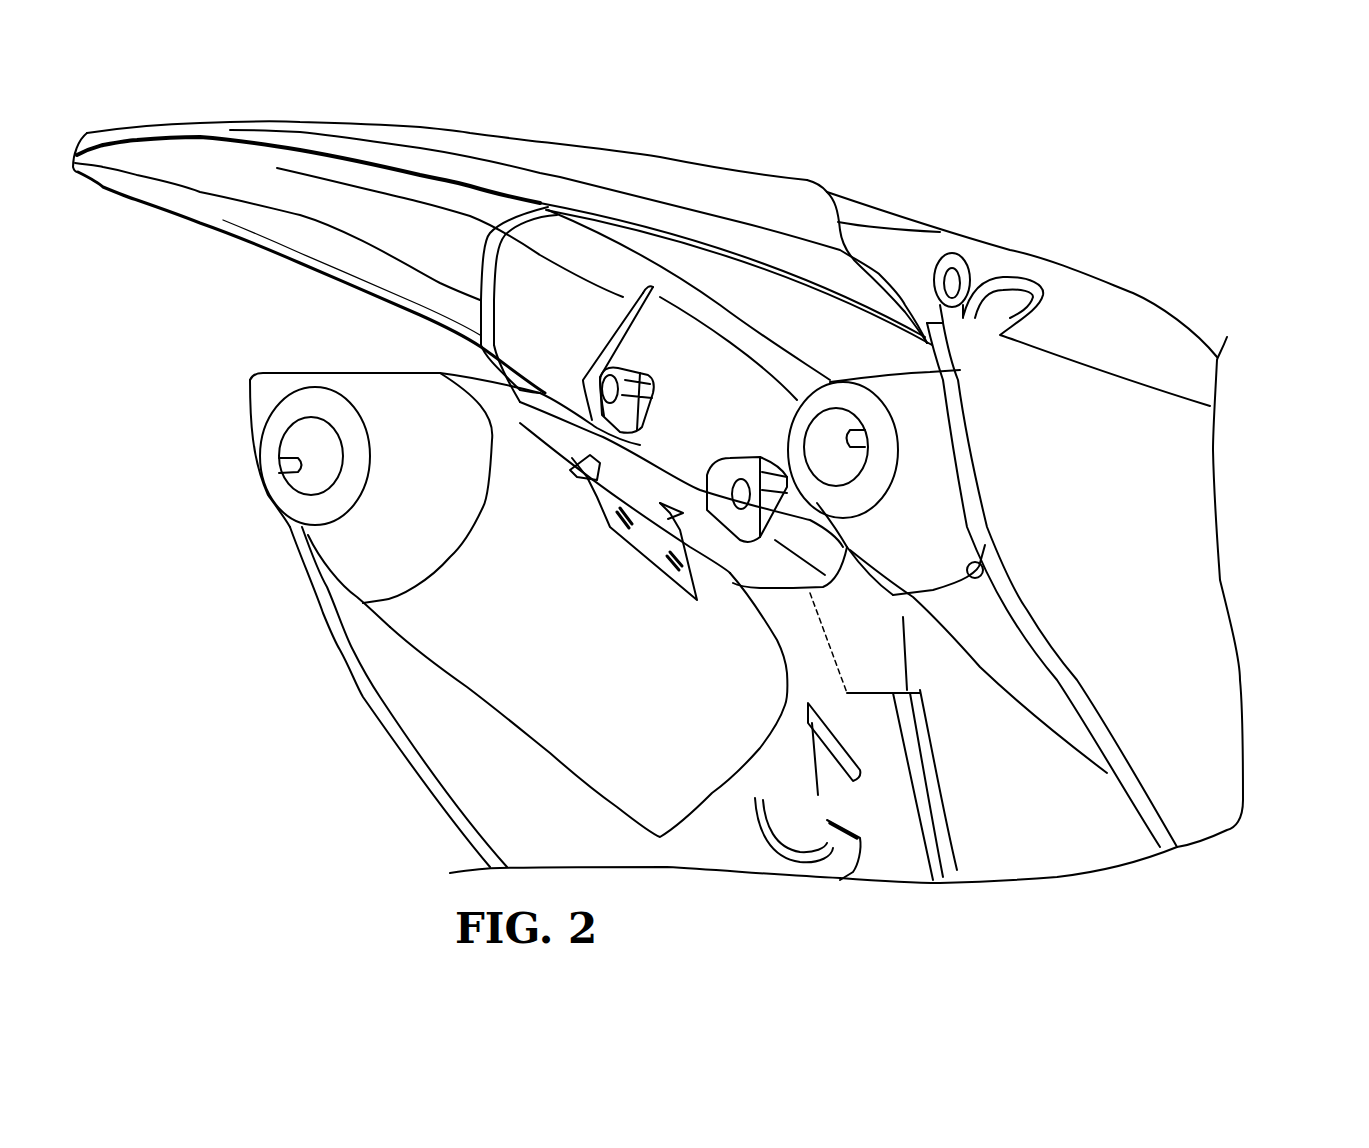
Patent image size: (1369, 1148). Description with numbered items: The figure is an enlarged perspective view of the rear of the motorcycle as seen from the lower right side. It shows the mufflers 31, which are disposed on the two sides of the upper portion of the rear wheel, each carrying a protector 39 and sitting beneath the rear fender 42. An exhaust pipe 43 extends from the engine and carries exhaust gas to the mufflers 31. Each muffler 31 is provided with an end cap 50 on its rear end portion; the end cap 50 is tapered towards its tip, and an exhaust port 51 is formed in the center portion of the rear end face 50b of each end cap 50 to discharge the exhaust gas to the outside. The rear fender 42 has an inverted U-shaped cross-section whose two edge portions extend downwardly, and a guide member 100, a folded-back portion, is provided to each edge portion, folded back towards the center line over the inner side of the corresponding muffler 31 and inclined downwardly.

The muffler 31 is at (553, 708).
The protector 39 is at (363, 697).
The rear fender 42 is at (455, 150).
The exhaust pipe 43 is at (827, 865).
The end cap 50 is at (357, 553).
The rear end face 50b is at (283, 418).
The exhaust port 51 is at (297, 473).
The guide member 100 is at (770, 307).